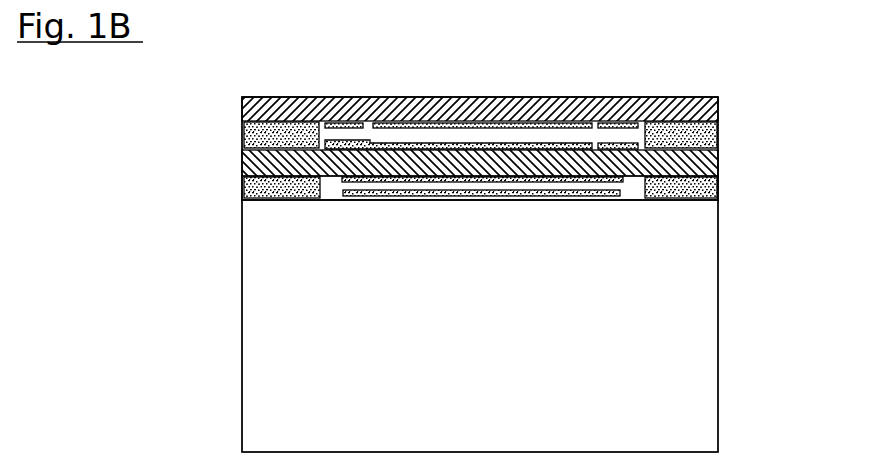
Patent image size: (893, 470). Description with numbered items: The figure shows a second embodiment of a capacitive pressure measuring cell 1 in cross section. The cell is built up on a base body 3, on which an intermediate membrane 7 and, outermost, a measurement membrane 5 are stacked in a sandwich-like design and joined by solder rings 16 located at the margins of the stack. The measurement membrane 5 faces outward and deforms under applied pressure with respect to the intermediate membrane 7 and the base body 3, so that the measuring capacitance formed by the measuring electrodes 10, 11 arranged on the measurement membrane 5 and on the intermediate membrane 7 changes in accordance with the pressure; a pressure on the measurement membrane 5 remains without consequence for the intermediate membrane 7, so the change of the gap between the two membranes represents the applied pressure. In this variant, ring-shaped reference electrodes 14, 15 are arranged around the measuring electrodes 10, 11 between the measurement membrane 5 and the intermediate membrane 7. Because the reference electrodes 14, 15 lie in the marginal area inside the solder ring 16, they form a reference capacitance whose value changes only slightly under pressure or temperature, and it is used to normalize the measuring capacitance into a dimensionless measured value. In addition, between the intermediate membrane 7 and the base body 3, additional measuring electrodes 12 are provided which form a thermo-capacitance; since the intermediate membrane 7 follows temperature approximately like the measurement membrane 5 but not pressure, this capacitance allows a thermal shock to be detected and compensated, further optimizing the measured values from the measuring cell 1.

The pressure measuring cell 1 is at (150, 298).
The base body 3 is at (475, 342).
The measurement membrane 5 is at (567, 98).
The intermediate membrane 7 is at (650, 182).
The measuring electrode 10 is at (396, 97).
The measuring electrode 11 is at (487, 142).
The additional measuring electrodes 12 is at (342, 180).
The reference electrode 14 is at (313, 103).
The reference electrode 15 is at (335, 140).
The solder rings 16 is at (720, 133).